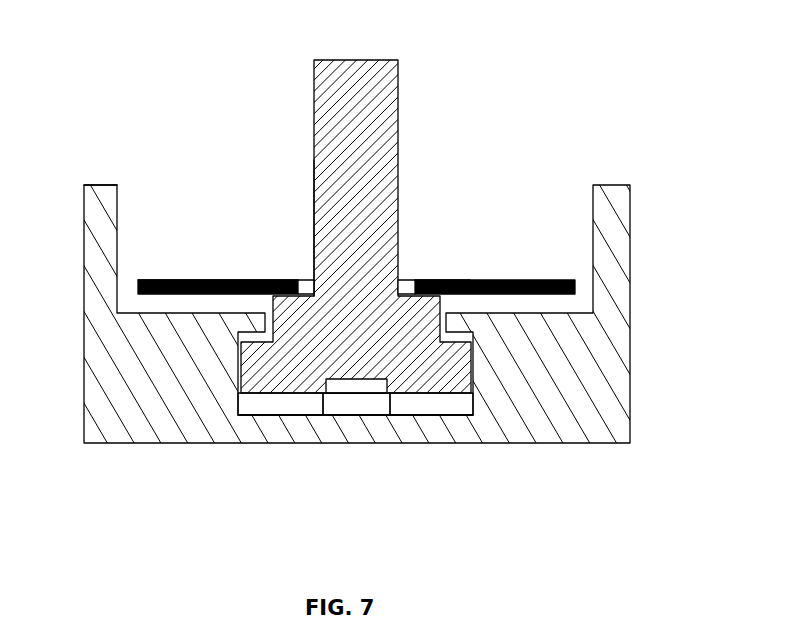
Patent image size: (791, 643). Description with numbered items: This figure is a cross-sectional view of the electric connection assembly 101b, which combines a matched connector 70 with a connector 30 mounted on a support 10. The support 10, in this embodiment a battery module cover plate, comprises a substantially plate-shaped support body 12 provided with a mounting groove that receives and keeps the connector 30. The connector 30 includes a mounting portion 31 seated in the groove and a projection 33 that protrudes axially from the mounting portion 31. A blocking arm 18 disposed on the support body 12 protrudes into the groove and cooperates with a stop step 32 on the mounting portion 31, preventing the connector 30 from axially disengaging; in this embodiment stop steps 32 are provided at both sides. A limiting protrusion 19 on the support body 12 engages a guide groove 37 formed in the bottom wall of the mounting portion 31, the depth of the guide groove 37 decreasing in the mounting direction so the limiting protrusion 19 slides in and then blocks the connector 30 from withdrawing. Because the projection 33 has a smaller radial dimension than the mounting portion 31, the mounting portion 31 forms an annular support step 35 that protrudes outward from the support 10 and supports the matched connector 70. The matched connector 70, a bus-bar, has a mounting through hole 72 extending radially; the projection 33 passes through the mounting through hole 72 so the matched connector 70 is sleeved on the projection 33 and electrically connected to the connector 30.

The electric connection assembly 101b is at (368, 35).
The support 10 is at (517, 515).
The support body 12 is at (511, 420).
The blocking arm 18 is at (262, 400).
The limiting protrusion 19 is at (350, 403).
The connector 30 is at (228, 135).
The mounting portion 31 is at (98, 185).
The stop step 32 is at (178, 280).
The projection 33 is at (293, 280).
The support step 35 is at (227, 280).
The guide groove 37 is at (450, 280).
The matched connector 70 is at (523, 280).
The mounting through hole 72 is at (408, 283).